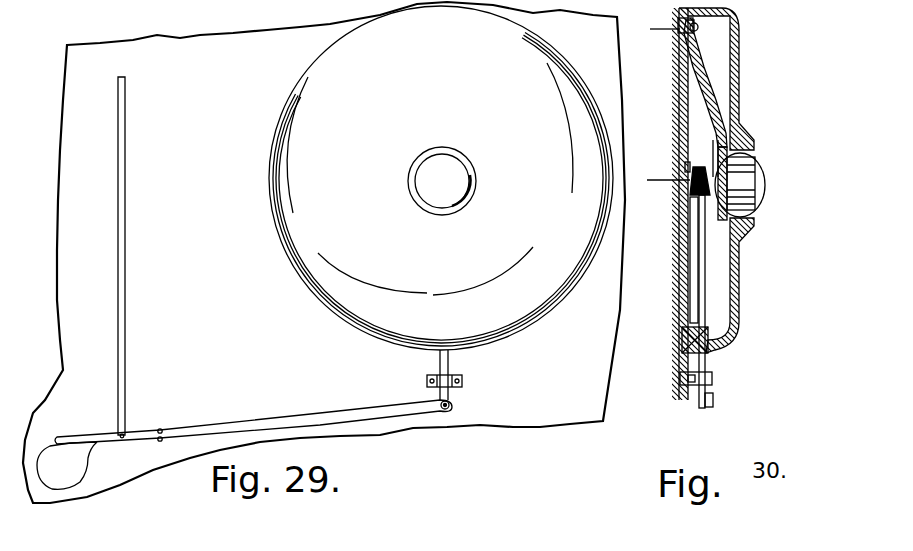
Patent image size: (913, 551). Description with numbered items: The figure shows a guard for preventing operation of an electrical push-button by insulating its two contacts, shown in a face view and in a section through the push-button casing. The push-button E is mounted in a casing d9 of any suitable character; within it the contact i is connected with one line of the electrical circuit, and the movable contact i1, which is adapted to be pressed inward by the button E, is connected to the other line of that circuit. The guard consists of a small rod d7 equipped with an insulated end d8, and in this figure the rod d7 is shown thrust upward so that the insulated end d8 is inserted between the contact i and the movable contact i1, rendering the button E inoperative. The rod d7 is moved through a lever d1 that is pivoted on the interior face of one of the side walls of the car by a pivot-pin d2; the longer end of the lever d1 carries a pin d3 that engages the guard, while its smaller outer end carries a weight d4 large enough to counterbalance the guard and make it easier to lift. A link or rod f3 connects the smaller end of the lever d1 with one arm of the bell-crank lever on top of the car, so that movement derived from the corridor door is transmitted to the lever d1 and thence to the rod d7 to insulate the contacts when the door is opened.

In FIG. 29, the lever d1 is at (253, 416).
In FIG. 29, the pivot-pin d2 is at (161, 430).
In FIG. 29, the pin d3 is at (444, 410).
In FIG. 29, the weight d4 is at (67, 465).
In FIG. 29, the rod d7 is at (450, 363).
In FIG. 30, the rod d7 is at (703, 307).
In FIG. 30, the insulated end d8 is at (683, 192).
In FIG. 29, the casing d9 is at (441, 189).
In FIG. 30, the casing d9 is at (737, 243).
In FIG. 29, the push-button E is at (450, 194).
In FIG. 30, the push-button E is at (755, 190).
In FIG. 29, the link or rod f3 is at (125, 363).
In FIG. 30, the contact i is at (677, 175).
In FIG. 30, the movable contact i1 is at (732, 165).